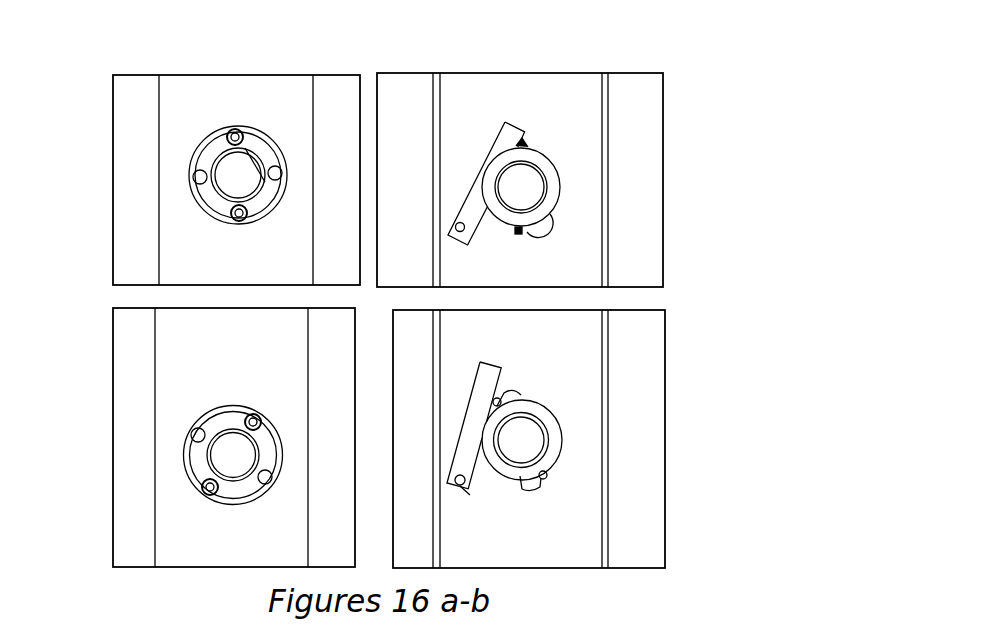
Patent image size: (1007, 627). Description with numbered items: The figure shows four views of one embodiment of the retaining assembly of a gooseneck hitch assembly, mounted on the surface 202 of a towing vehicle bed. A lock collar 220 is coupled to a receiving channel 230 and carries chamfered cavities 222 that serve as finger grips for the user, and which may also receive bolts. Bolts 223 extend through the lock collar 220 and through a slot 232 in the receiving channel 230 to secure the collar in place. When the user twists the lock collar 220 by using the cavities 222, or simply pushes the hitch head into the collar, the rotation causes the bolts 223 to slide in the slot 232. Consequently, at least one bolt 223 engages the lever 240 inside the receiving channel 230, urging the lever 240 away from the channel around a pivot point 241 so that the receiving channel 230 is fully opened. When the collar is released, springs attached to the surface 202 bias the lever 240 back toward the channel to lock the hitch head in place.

In FIG. 16a, the surface 202 is at (210, 90).
In FIG. 16b, the surface 202 is at (593, 108).
In FIG. 16c, the surface 202 is at (165, 365).
In FIG. 16a, the lock collar 220 is at (203, 197).
In FIG. 16c, the lock collar 220 is at (197, 472).
In FIG. 16a, the cavity 222 is at (277, 167).
In FIG. 16b, the bolt 223 is at (524, 147).
In FIG. 16c, the bolt 223 is at (255, 415).
In FIG. 16b, the receiving channel 230 is at (555, 187).
In FIG. 16b, the slot 232 is at (550, 217).
In FIG. 16d, the slot 232 is at (517, 395).
In FIG. 16a, the lever 240 is at (248, 150).
In FIG. 16b, the lever 240 is at (508, 122).
In FIG. 16d, the lever 240 is at (495, 370).
In FIG. 16b, the pivot point 241 is at (520, 233).
In FIG. 16d, the pivot point 241 is at (467, 490).